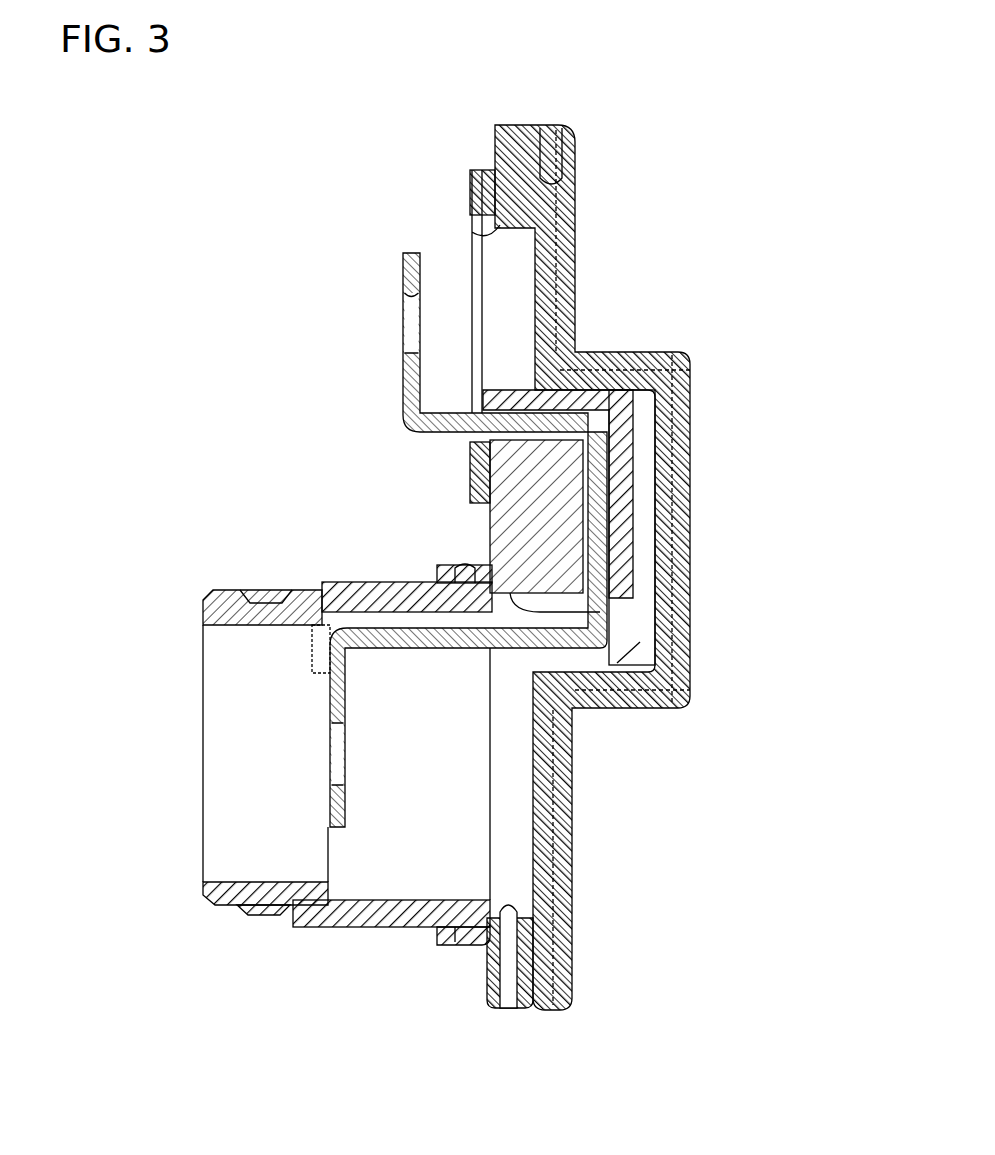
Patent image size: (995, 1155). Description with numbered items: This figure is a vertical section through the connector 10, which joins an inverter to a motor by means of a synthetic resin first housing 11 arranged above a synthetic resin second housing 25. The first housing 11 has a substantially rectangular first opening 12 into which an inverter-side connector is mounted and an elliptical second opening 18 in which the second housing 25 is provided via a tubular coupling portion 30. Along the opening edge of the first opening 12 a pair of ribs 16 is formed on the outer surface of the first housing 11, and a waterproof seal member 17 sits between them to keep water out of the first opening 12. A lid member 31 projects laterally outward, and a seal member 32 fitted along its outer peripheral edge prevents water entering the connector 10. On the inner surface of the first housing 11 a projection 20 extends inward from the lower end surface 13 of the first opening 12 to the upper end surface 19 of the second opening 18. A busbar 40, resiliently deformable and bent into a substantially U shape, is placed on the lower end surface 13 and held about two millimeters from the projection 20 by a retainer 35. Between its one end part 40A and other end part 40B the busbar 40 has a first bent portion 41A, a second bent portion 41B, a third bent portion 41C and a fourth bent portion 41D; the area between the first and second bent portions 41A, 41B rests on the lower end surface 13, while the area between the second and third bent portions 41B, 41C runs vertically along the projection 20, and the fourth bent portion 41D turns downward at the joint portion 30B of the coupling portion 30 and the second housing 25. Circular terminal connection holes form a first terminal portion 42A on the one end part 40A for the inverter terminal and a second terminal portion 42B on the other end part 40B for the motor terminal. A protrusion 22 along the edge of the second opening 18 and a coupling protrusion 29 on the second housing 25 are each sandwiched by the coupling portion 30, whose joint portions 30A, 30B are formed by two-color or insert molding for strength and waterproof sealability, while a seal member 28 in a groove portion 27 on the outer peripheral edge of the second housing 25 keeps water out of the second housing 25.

The connector 10 is at (515, 99).
The first housing 11 is at (515, 1010).
The first opening 12 is at (494, 232).
The lower end surface 13 is at (562, 412).
The ribs 16 is at (492, 170).
The waterproof seal member 17 is at (474, 188).
The second opening 18 is at (503, 1010).
The upper end surface 19 is at (600, 612).
The projection 20 is at (600, 505).
The protrusion 22 is at (445, 583).
The second housing 25 is at (218, 905).
The groove portion 27 is at (292, 592).
The seal member 28 is at (255, 590).
The coupling protrusion 29 is at (380, 583).
The coupling portion 30 is at (385, 928).
The joint portion 30A is at (478, 575).
The joint portion 30B is at (336, 584).
The lid member 31 is at (572, 135).
The seal member 32 is at (530, 126).
The retainer 35 is at (603, 428).
The busbar 40 is at (655, 548).
The one end part 40A is at (403, 270).
The other end part 40B is at (330, 810).
The first bent portion 41A is at (405, 405).
The second bent portion 41B is at (633, 402).
The third bent portion 41C is at (615, 658).
The fourth bent portion 41D is at (330, 640).
The first terminal portion 42A is at (403, 300).
The second terminal portion 42B is at (336, 783).